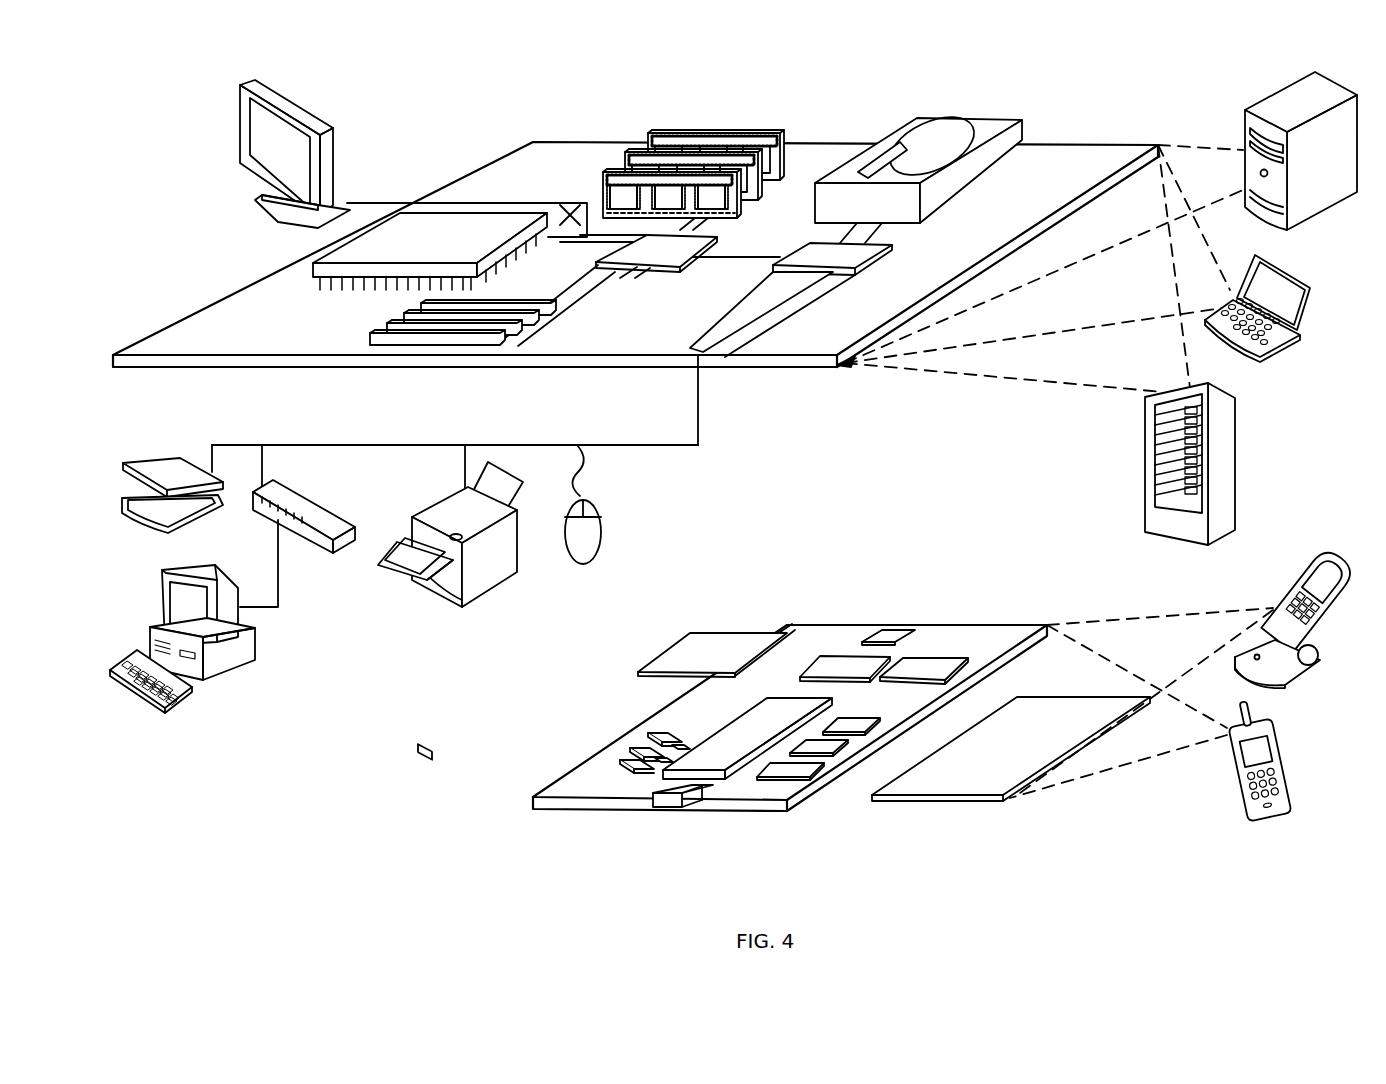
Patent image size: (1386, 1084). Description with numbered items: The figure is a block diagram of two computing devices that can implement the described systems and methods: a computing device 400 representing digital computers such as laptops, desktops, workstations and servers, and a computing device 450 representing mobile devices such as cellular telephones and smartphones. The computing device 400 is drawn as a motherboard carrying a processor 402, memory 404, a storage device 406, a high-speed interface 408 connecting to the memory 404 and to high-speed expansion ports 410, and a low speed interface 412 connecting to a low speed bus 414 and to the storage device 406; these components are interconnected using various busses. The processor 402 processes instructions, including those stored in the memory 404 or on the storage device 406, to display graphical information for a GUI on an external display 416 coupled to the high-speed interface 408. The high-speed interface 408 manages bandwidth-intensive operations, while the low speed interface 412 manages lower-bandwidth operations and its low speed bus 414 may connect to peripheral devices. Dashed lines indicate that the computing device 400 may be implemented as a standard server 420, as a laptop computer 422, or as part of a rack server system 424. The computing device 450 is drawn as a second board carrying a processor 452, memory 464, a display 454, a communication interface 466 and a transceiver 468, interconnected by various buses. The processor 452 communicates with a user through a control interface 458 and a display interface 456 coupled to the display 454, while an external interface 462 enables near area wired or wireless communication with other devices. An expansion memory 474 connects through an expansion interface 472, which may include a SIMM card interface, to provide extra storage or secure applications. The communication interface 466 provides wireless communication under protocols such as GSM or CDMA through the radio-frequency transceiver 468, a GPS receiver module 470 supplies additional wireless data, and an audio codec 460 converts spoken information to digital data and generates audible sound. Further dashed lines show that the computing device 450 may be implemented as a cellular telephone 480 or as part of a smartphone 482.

The computing device 400 is at (442, 100).
The processor 402 is at (323, 267).
The memory 404 is at (660, 130).
The storage device 406 is at (898, 92).
The high-speed interface 408 is at (628, 251).
The high-speed expansion ports 410 is at (387, 327).
The low speed interface 412 is at (813, 250).
The low speed bus 414 is at (710, 360).
The display 416 is at (240, 83).
The standard server 420 is at (1243, 128).
The laptop computer 422 is at (1314, 288).
The rack server system 424 is at (1146, 490).
The computing device 450 is at (503, 808).
The processor 452 is at (718, 765).
The display 454 is at (967, 782).
The display interface 456 is at (788, 768).
The control interface 458 is at (826, 745).
The audio codec 460 is at (853, 722).
The external interface 462 is at (682, 790).
The memory 464 is at (632, 755).
The communication interface 466 is at (845, 667).
The transceiver 468 is at (928, 665).
The GPS receiver module 470 is at (897, 632).
The expansion interface 472 is at (763, 640).
The expansion memory 474 is at (679, 640).
The cellular telephone 480 is at (1290, 590).
The smartphone 482 is at (1232, 765).